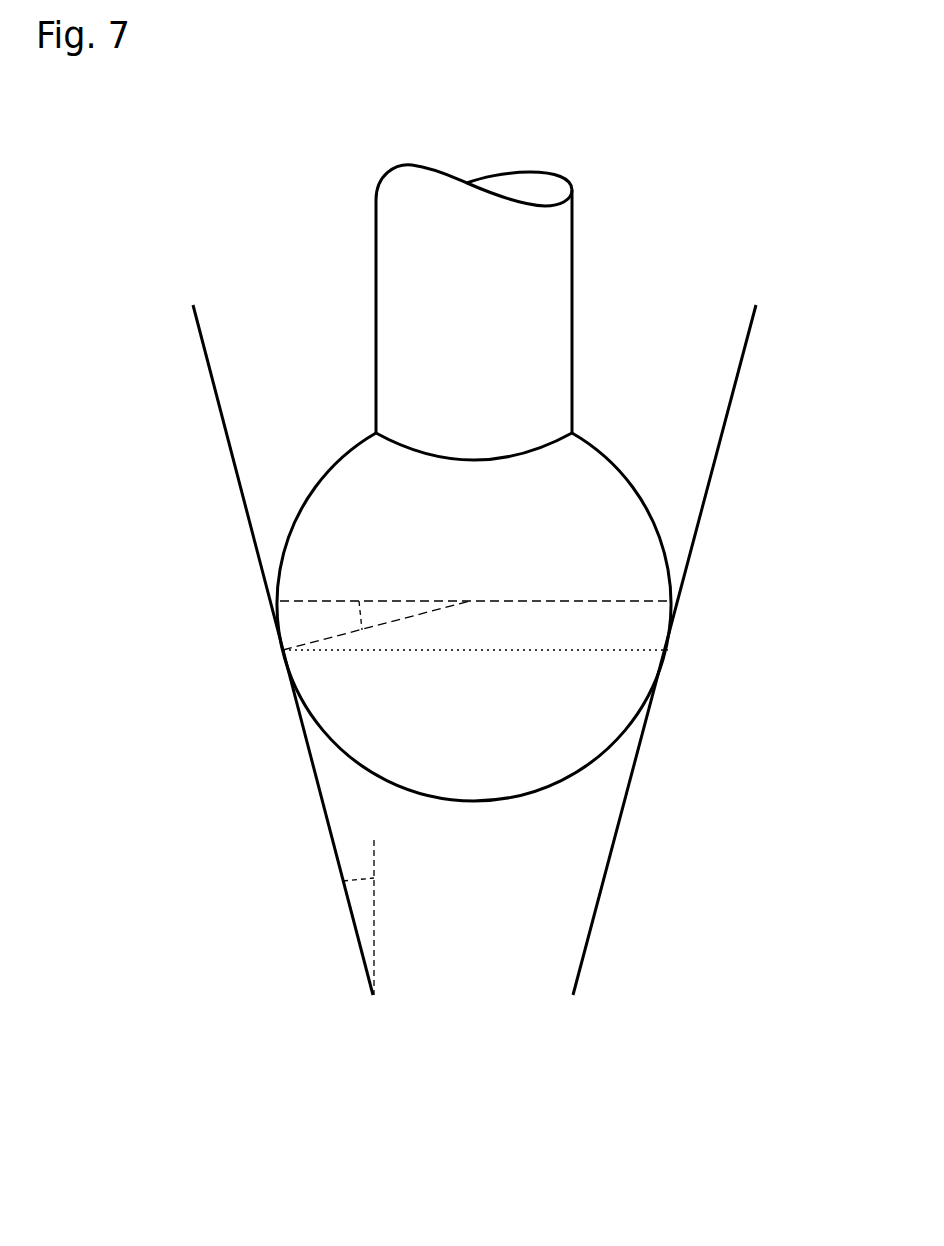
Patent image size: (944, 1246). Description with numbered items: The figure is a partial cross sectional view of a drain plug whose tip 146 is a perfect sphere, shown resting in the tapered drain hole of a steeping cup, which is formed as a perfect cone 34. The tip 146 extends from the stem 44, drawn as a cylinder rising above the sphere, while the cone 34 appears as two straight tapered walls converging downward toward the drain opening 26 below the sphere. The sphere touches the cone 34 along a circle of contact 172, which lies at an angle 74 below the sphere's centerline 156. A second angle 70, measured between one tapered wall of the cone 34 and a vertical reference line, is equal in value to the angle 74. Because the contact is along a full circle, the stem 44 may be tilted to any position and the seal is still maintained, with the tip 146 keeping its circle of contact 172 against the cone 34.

The stem 44 is at (521, 320).
The tip 146 is at (367, 513).
The cone 34 is at (615, 852).
The cavity 26 is at (465, 952).
The centerline 156 is at (590, 601).
The circle of contact 172 is at (283, 650).
The angle 74 is at (376, 625).
The angle 70 is at (358, 917).